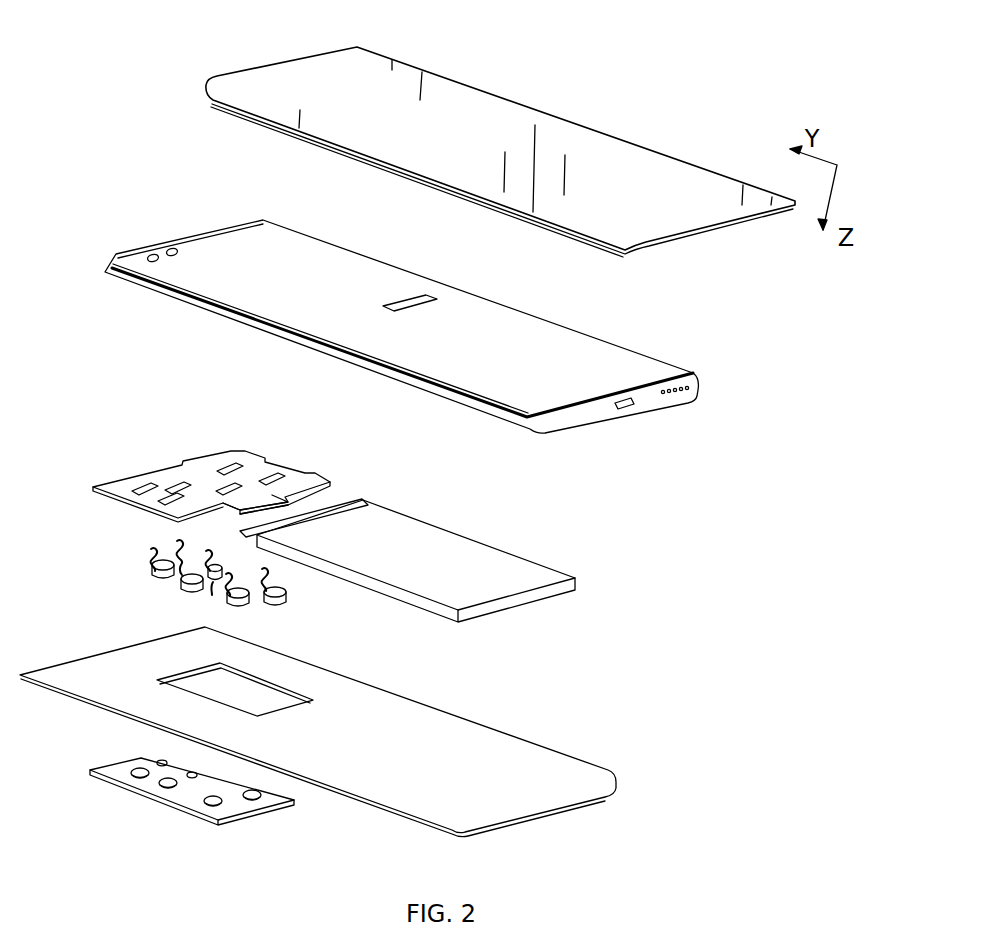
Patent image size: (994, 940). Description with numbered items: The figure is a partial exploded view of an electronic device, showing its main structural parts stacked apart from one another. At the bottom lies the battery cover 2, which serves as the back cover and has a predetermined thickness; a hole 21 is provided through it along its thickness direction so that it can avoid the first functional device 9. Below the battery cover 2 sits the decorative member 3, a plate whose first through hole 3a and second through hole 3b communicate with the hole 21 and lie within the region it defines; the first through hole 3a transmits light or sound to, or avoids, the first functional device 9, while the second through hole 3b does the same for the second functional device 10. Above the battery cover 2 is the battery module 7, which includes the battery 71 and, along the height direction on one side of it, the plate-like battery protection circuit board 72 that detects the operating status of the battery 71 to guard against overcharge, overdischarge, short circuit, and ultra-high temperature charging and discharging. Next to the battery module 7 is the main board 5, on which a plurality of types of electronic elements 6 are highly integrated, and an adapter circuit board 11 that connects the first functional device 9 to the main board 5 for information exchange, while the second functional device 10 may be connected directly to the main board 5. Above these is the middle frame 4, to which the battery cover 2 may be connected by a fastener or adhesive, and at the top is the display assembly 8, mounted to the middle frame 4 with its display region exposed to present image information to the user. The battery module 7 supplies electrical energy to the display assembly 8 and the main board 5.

The battery cover 2 is at (351, 732).
The decorative member 3 is at (215, 795).
The first through hole 3a is at (212, 801).
The second through hole 3b is at (191, 774).
The middle frame 4 is at (545, 345).
The main board 5 is at (212, 465).
The electronic element 6 is at (150, 487).
The battery module 7 is at (407, 538).
The battery 71 is at (540, 592).
The battery protection circuit board 72 is at (365, 503).
The display assembly 8 is at (467, 106).
The first functional device 9 is at (247, 601).
The second functional device 10 is at (221, 583).
The adapter circuit board 11 is at (263, 500).
The hole 21 is at (268, 702).